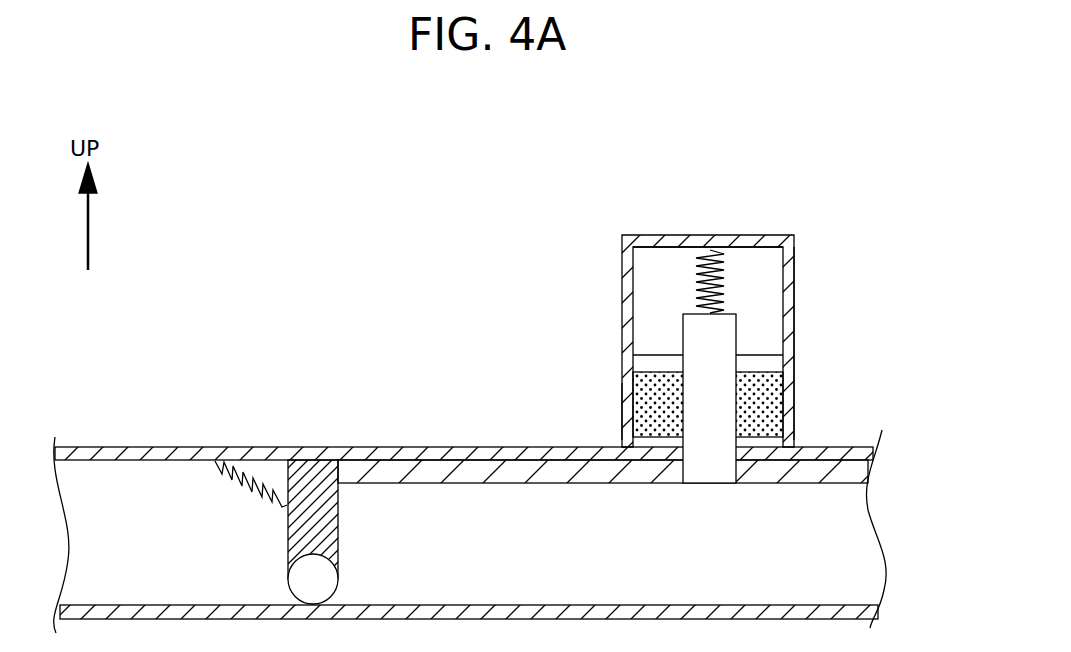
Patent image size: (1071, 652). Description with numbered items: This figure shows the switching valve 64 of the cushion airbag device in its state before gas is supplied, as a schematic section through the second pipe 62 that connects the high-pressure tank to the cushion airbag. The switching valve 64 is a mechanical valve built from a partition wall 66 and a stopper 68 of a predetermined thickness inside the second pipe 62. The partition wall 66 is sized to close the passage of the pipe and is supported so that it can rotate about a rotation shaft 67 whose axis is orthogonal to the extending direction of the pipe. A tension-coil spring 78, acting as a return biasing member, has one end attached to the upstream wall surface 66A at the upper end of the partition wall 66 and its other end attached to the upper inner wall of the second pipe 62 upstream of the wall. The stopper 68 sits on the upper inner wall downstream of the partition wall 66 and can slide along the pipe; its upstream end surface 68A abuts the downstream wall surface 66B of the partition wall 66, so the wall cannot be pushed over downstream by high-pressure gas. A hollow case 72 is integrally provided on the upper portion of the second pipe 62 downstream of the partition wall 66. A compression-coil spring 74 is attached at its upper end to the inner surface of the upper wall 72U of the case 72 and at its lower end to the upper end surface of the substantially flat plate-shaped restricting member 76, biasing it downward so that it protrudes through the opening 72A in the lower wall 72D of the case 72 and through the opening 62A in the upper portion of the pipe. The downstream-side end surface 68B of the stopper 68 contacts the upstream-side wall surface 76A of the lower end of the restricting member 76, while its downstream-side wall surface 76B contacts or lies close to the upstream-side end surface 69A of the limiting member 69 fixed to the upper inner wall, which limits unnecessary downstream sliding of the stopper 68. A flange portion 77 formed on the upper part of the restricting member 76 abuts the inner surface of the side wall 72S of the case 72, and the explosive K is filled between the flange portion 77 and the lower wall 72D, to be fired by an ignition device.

The second pipe 62 is at (118, 445).
The opening 62A is at (736, 443).
The switching valve 64 is at (356, 313).
The partition wall 66 is at (316, 459).
The wall surface 66A is at (288, 470).
The downstream wall surface 66B is at (362, 483).
The rotation shaft 67 is at (297, 582).
The stopper 68 is at (462, 459).
The upstream end surface 68A is at (340, 505).
The downstream-side end surface 68B is at (696, 483).
The limiting member 69 is at (811, 497).
The upstream-side end surface 69A is at (727, 483).
The case 72 is at (752, 233).
The opening 72A is at (736, 422).
The lower wall 72D is at (622, 383).
The side wall 72S is at (795, 257).
The upper wall 72U is at (687, 243).
The compression-coil spring 74 is at (727, 290).
The restricting member 76 is at (682, 311).
The upstream-side wall surface 76A is at (683, 483).
The downstream-side wall surface 76B is at (736, 473).
The flange portion 77 is at (757, 356).
The tension-coil spring 78 is at (243, 490).
The explosive K is at (633, 420).